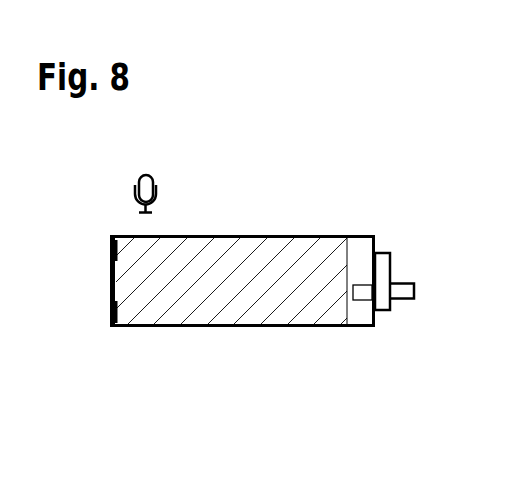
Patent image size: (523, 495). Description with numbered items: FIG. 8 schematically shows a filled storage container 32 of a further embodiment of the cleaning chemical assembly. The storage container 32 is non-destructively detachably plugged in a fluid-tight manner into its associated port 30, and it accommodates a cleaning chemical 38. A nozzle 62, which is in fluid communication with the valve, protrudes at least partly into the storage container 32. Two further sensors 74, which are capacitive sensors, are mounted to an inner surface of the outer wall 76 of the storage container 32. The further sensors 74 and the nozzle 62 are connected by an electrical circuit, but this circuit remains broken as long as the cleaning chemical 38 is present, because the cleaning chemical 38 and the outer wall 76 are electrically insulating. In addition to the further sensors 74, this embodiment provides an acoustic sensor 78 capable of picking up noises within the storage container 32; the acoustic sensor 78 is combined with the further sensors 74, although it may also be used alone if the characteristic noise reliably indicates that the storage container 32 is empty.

The port 30 is at (387, 312).
The storage container 32 is at (104, 343).
The cleaning chemical 38 is at (295, 250).
The nozzle 62 is at (360, 293).
The further sensors 74 is at (118, 262).
The outer wall 76 is at (272, 328).
The acoustic sensor 78 is at (143, 172).